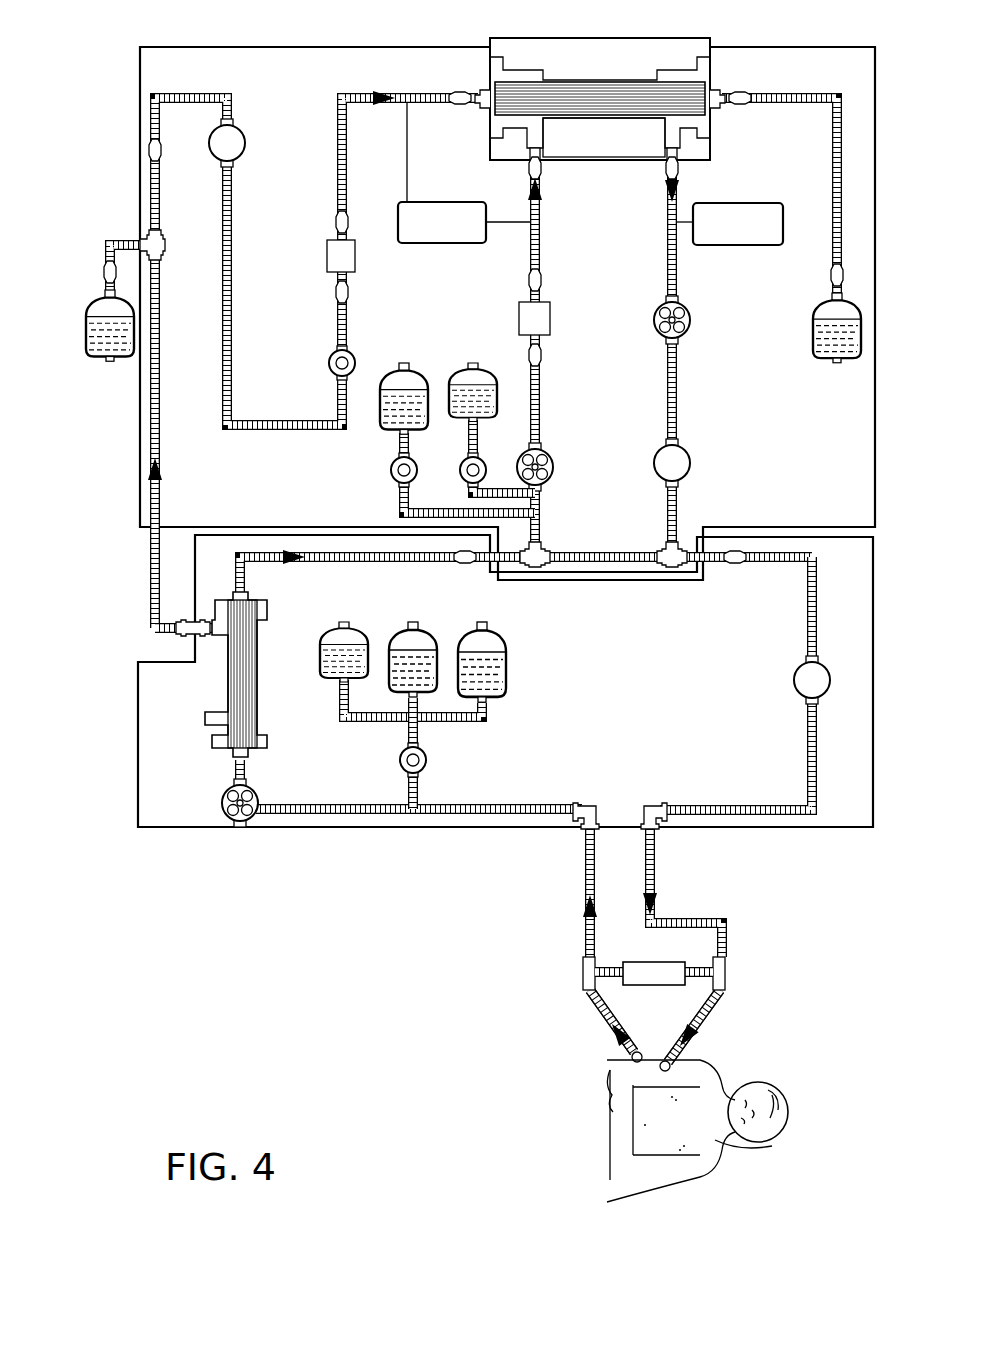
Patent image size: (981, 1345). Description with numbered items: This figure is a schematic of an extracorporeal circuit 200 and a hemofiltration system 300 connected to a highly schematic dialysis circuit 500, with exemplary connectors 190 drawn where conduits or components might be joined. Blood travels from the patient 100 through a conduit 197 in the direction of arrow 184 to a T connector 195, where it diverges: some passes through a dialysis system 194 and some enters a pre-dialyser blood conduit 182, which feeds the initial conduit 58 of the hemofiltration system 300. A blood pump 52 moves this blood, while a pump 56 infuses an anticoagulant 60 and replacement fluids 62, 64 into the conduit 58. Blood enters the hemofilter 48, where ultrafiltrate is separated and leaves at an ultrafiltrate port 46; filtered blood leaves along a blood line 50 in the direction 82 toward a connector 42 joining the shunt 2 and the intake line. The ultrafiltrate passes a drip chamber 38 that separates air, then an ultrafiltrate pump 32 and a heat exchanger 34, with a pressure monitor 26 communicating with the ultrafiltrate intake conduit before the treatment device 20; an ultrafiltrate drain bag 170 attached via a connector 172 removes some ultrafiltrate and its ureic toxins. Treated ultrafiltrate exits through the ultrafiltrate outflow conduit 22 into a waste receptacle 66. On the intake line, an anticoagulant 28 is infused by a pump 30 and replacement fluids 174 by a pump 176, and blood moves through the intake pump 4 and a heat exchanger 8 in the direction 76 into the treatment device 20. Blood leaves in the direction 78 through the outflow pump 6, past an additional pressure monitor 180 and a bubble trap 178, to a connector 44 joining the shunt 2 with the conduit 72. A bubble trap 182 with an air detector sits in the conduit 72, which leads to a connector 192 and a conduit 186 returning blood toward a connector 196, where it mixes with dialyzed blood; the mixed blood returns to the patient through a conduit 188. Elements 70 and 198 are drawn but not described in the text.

The shunt 2 is at (585, 553).
The intake pump 4 is at (553, 467).
The outflow pump 6 is at (690, 320).
The heat exchanger 8 is at (552, 318).
The treatment device 20 is at (615, 38).
The ultrafiltrate outflow conduit 22 is at (833, 96).
The pressure monitor 26 is at (460, 247).
The anticoagulant 28 is at (478, 378).
The pump 30 is at (460, 468).
The ultrafiltrate pump 32 is at (328, 363).
The heat exchanger 34 is at (325, 256).
The drip chamber 38 is at (246, 146).
The connector 42 is at (542, 545).
The connector 44 is at (660, 545).
The ultrafiltrate port 46 is at (185, 622).
The hemofilter 48 is at (205, 718).
The blood line 50 is at (395, 565).
The blood pump 52 is at (250, 788).
The pump 56 is at (428, 760).
The conduit 58 is at (522, 803).
The anticoagulant 60 is at (350, 640).
The replacement fluid 62 is at (420, 640).
The replacement fluid 64 is at (496, 660).
The waste receptacle 66 is at (828, 366).
The tubing 70 is at (793, 566).
The conduit 72 is at (815, 642).
The flow direction of blood in the intake line 76 is at (547, 192).
The flow direction of blood in the first outflow conduit portion 78 is at (660, 192).
The flow direction of blood in the blood line 82 is at (292, 563).
The patient 100 is at (770, 1088).
The ultrafiltrate drain bag 170 is at (126, 362).
The connector 172 is at (163, 242).
The replacement fluids 174 is at (412, 378).
The pump 176 is at (390, 470).
The bubble trap 178 is at (690, 463).
The additional pressure monitor 180 is at (708, 247).
The bubble trap 182 is at (583, 860).
The arrow 184 is at (583, 888).
The conduit 186 is at (655, 858).
The conduit 188 is at (655, 890).
The connectors 190 is at (456, 92).
The connector 192 is at (650, 803).
The dialysis system 194 is at (662, 962).
The T connector 195 is at (582, 972).
The connector 196 is at (724, 975).
The conduit 197 is at (588, 1000).
The venous tubing 198 is at (718, 1005).
The extracorporeal circuit 200 is at (74, 534).
The hemofiltration system 300 is at (74, 830).
The dialysis circuit 500 is at (74, 842).